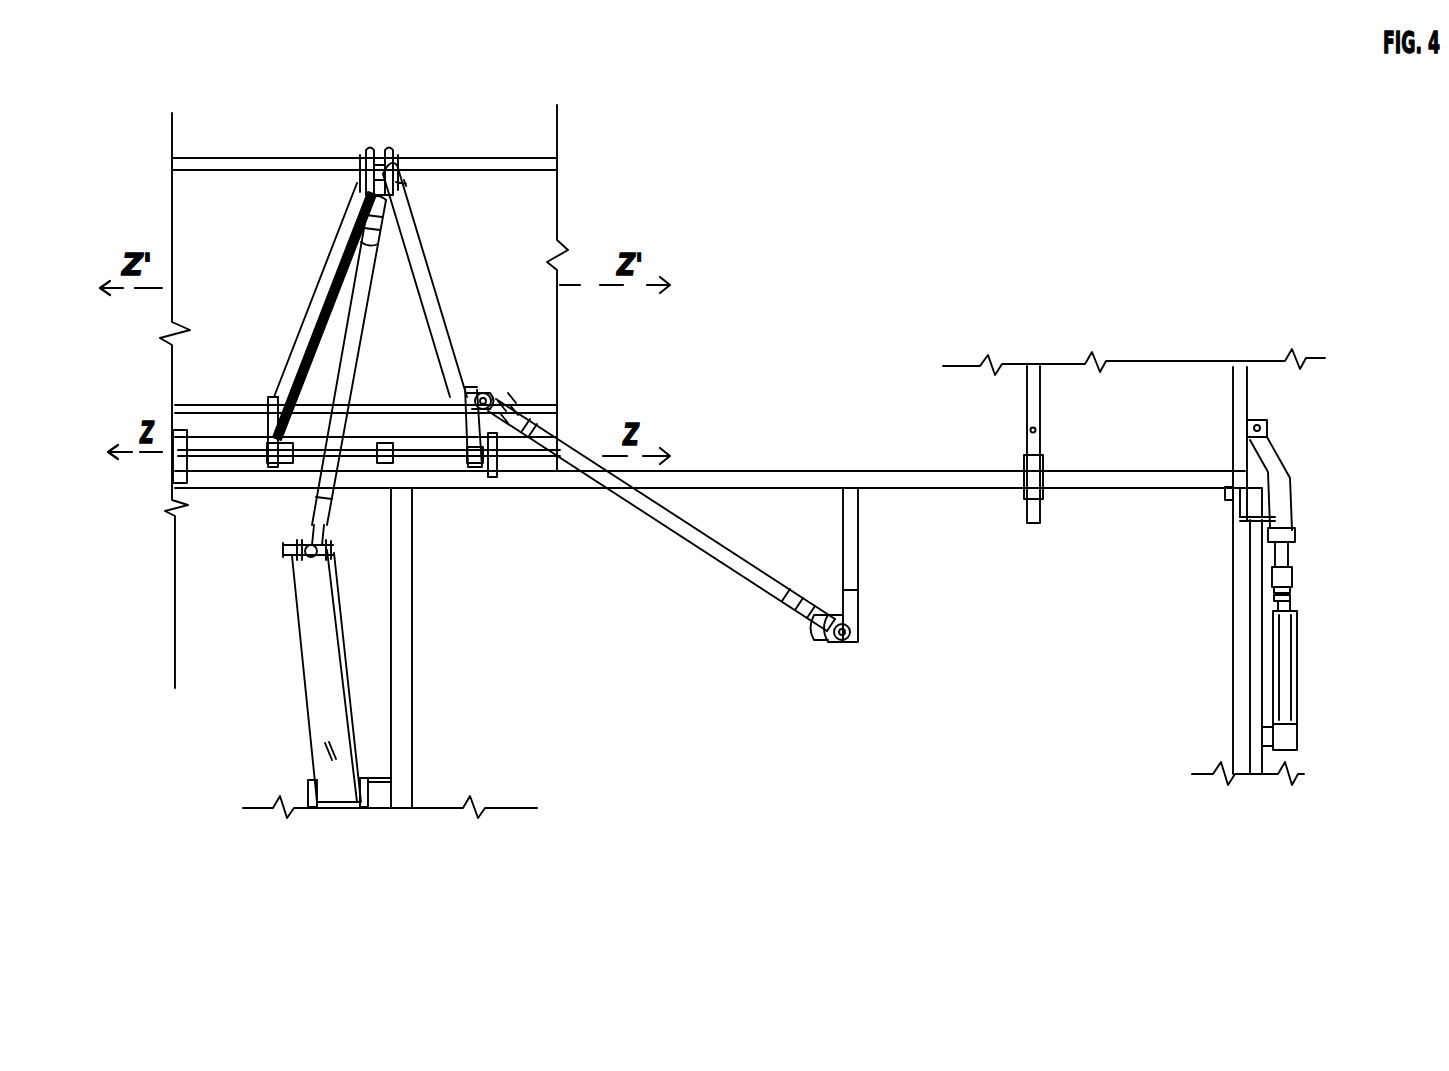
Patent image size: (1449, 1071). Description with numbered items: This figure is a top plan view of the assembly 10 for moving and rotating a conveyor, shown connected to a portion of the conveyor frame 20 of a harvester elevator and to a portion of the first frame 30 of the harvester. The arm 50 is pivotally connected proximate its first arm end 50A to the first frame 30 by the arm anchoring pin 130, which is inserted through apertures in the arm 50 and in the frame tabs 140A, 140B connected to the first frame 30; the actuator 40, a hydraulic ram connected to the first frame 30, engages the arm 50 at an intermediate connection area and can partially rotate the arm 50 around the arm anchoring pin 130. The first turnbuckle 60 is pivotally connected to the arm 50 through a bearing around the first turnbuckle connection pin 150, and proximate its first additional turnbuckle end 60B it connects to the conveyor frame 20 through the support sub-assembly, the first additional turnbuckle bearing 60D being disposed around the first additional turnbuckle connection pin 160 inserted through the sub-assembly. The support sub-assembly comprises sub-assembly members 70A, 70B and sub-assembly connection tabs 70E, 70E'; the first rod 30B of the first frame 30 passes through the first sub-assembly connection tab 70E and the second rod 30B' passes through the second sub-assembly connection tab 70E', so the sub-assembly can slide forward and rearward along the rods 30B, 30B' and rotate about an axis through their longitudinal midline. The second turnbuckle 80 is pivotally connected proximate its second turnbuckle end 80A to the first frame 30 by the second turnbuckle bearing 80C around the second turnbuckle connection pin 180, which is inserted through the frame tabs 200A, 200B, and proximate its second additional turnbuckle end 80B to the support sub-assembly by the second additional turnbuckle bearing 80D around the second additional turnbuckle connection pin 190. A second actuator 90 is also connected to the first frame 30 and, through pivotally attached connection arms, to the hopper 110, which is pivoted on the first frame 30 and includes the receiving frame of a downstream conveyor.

The assembly 10 is at (687, 377).
The conveyor frame 20 is at (467, 160).
The first frame 30 is at (392, 476).
The first rod 30B is at (369, 514).
The second rod 30B' is at (180, 421).
The actuator 40 is at (343, 440).
The arm 50 is at (320, 700).
The first arm end 50A is at (341, 814).
The first turnbuckle 60 is at (358, 292).
The first additional turnbuckle end 60B is at (383, 152).
The first additional turnbuckle bearing 60D is at (370, 172).
The sub-assembly member 70A is at (407, 243).
The sub-assembly member 70B is at (327, 270).
The first sub-assembly connection tab 70E is at (503, 379).
The second sub-assembly connection tab 70E' is at (241, 396).
The second turnbuckle 80 is at (722, 547).
The second turnbuckle end 80A is at (826, 650).
The second additional turnbuckle end 80B is at (500, 389).
The second turnbuckle bearing 80C is at (857, 622).
The second additional turnbuckle bearing 80D is at (507, 410).
The second actuator 90 is at (1284, 664).
The hopper 110 is at (1030, 400).
The arm anchoring pin 130 is at (357, 808).
The frame tab 140A is at (313, 803).
The frame tab 140B is at (368, 780).
The first turnbuckle connection pin 150 is at (308, 576).
The first additional turnbuckle connection pin 160 is at (463, 166).
The second turnbuckle connection pin 180 is at (842, 643).
The second additional turnbuckle connection pin 190 is at (510, 425).
The frame tab 200A is at (847, 643).
The frame tab 200B is at (858, 625).